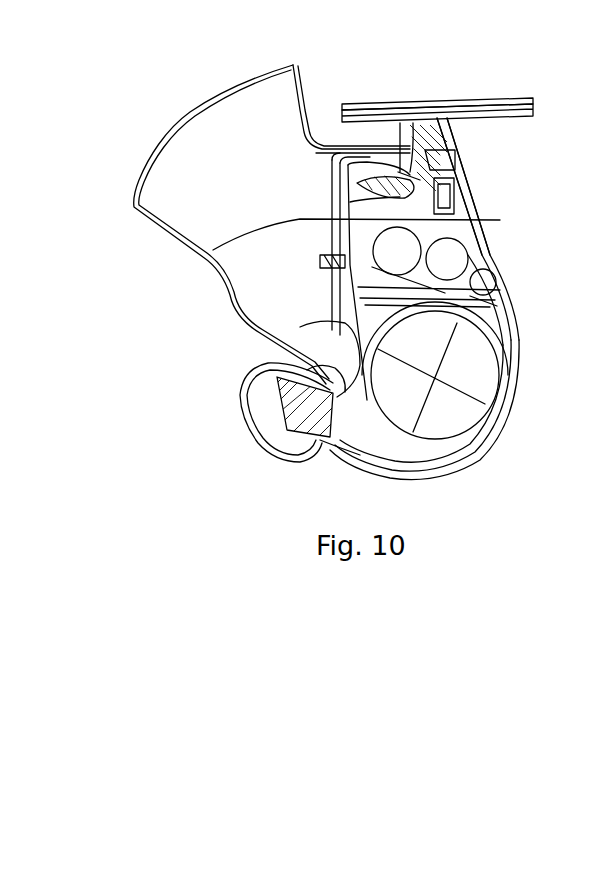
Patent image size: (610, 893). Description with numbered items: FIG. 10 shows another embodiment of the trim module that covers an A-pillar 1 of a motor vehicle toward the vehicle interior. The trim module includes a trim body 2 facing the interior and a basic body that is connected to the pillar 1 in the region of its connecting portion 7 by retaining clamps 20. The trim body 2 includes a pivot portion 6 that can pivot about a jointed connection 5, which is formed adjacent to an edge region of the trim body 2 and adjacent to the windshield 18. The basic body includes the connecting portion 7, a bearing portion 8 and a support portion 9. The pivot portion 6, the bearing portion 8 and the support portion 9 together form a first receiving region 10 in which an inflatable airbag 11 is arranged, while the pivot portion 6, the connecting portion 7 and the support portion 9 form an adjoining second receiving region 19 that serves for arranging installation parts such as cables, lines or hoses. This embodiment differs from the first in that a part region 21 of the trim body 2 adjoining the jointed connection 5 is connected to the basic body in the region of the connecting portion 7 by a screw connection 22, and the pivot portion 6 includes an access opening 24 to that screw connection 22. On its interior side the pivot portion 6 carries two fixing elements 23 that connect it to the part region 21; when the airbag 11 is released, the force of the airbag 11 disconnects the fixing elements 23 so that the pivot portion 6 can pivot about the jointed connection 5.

The A-pillar 1 is at (128, 165).
The trim body 2 is at (524, 250).
The jointed connection 5 is at (533, 96).
The pivot portion 6 is at (516, 380).
The connecting portion 7 is at (343, 200).
The bearing portion 8 is at (330, 325).
The support portion 9 is at (497, 306).
The first receiving region 10 is at (360, 436).
The airbag 11 is at (468, 413).
The windshield 18 is at (438, 102).
The second receiving region 19 is at (478, 268).
The retaining clamps 20 is at (320, 262).
The part region 21 is at (193, 266).
The screw connection 22 is at (400, 125).
The fixing elements 23 is at (452, 151).
The access opening 24 is at (478, 187).